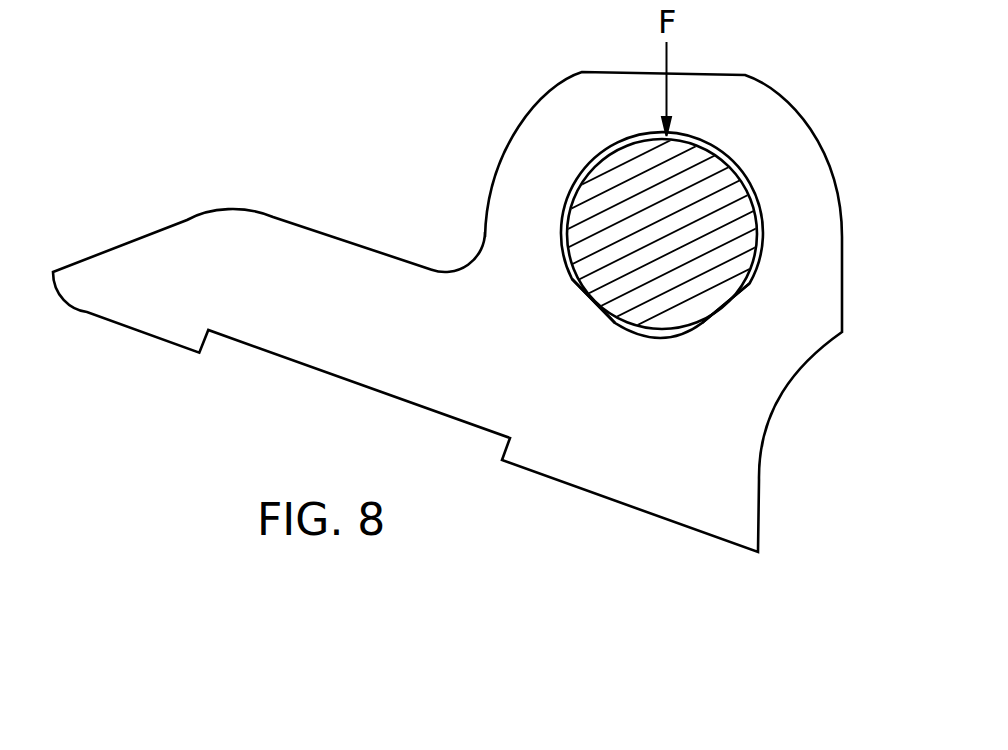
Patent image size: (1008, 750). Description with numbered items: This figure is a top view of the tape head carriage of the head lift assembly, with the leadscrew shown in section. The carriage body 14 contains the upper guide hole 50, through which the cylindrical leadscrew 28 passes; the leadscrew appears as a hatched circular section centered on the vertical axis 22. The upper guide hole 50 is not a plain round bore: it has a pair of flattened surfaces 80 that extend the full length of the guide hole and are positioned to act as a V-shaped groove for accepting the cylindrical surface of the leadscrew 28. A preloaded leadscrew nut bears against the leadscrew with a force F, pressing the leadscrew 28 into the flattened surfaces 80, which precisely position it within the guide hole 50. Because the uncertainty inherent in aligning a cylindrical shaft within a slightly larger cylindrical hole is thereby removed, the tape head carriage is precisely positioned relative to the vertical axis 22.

The mounting plate 14 is at (745, 478).
The vertical axis 22 is at (660, 235).
The leadscrew 28 is at (723, 180).
The upper guide hole 50 is at (757, 224).
The flattened surfaces 80 is at (588, 292).